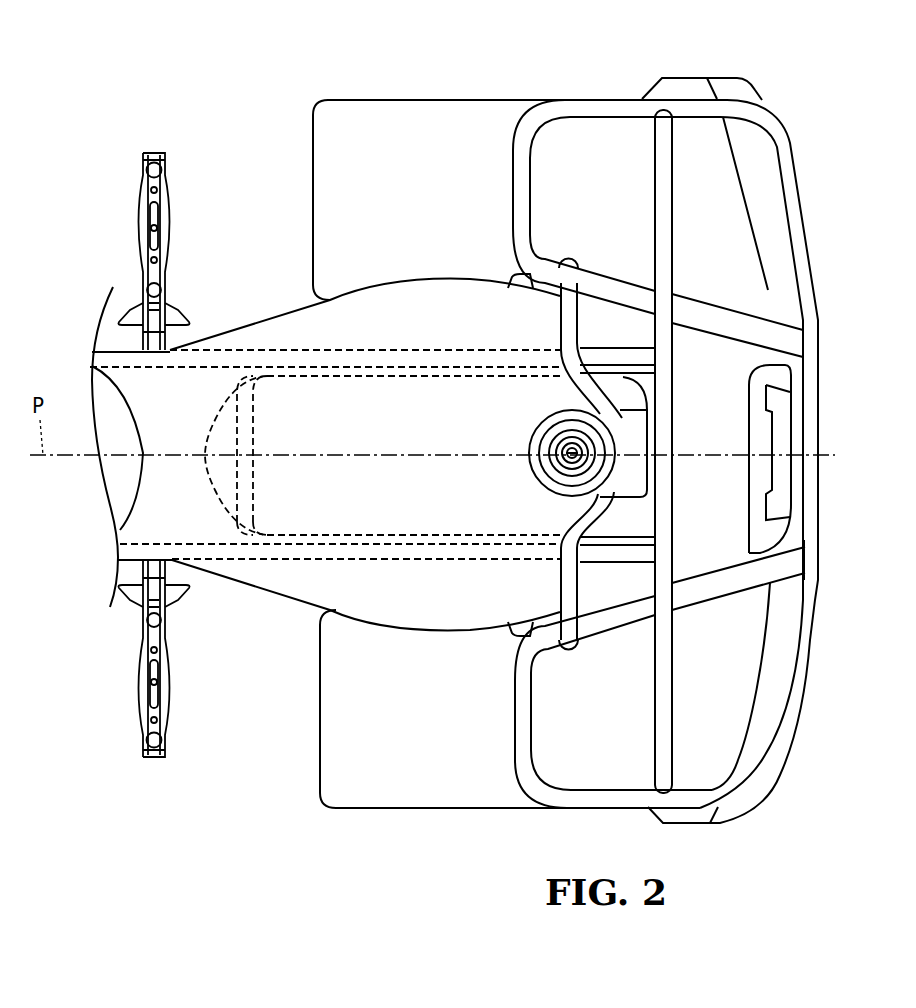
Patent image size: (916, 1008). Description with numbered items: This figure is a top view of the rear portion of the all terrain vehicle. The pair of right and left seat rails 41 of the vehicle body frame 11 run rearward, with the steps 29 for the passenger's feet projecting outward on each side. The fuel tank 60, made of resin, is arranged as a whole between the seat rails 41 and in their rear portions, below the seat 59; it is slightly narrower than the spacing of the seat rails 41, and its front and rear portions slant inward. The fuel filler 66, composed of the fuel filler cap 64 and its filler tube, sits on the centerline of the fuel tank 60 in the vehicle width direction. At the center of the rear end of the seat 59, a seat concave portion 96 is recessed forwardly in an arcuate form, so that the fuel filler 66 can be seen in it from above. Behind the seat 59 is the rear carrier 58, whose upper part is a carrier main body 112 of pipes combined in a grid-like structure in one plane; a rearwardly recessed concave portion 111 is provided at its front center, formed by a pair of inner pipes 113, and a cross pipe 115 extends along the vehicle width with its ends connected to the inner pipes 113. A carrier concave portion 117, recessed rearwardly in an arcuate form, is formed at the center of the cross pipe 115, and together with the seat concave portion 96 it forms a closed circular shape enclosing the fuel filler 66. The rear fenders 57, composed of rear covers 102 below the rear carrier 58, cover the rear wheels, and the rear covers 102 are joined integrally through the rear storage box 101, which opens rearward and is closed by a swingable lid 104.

The vehicle body frame 11 is at (601, 337).
The steps 29 is at (153, 154).
The seat rails 41 is at (262, 350).
The rear fenders 57 is at (398, 123).
The rear carrier 58 is at (760, 95).
The seat 59 is at (227, 333).
The fuel tank 60 is at (577, 497).
The fuel filler cap 64 is at (625, 417).
The fuel filler 66 is at (587, 420).
The seat concave portion 96 is at (557, 478).
The rear storage box 101 is at (722, 375).
The rear covers 102 is at (681, 76).
The lid 104 is at (783, 432).
The concave portion 111 is at (645, 634).
The carrier main body 112 is at (610, 92).
The inner pipes 113 is at (617, 288).
The cross pipe 115 is at (650, 440).
The carrier concave portion 117 is at (650, 520).